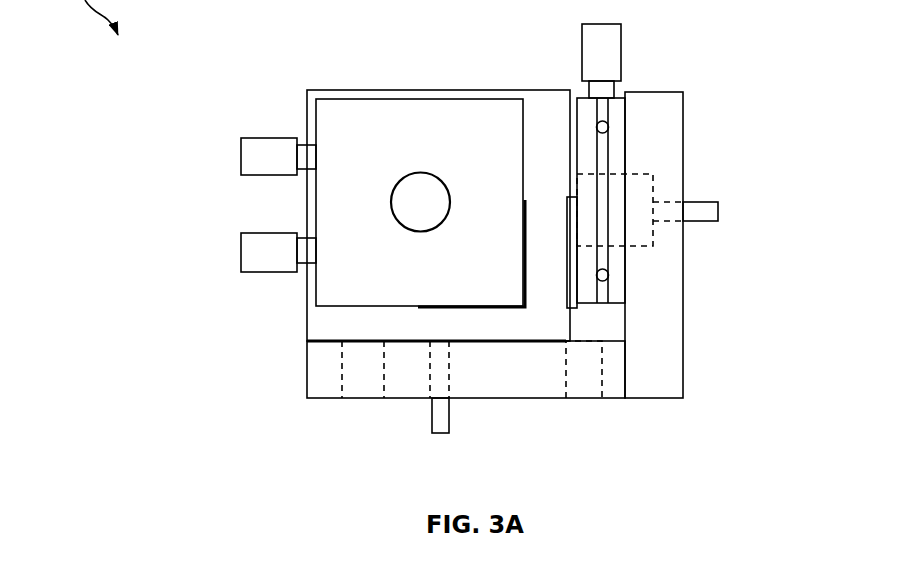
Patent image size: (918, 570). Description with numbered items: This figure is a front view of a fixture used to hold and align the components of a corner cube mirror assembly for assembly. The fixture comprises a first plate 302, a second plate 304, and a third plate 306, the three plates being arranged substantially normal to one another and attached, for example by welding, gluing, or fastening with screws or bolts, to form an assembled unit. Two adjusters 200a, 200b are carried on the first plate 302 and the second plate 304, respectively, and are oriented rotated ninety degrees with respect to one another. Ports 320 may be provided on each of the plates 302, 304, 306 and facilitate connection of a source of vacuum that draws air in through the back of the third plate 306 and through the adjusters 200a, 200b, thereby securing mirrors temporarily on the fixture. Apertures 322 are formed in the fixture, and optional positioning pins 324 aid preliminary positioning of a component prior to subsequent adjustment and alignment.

The first plate 302 is at (405, 90).
The adjuster 200a is at (453, 99).
The adjuster 200b is at (625, 153).
The second plate 304 is at (683, 316).
The third plate 306 is at (316, 398).
The ports 320 is at (700, 202).
The apertures 322 is at (365, 406).
The positioning pins 324 is at (505, 343).